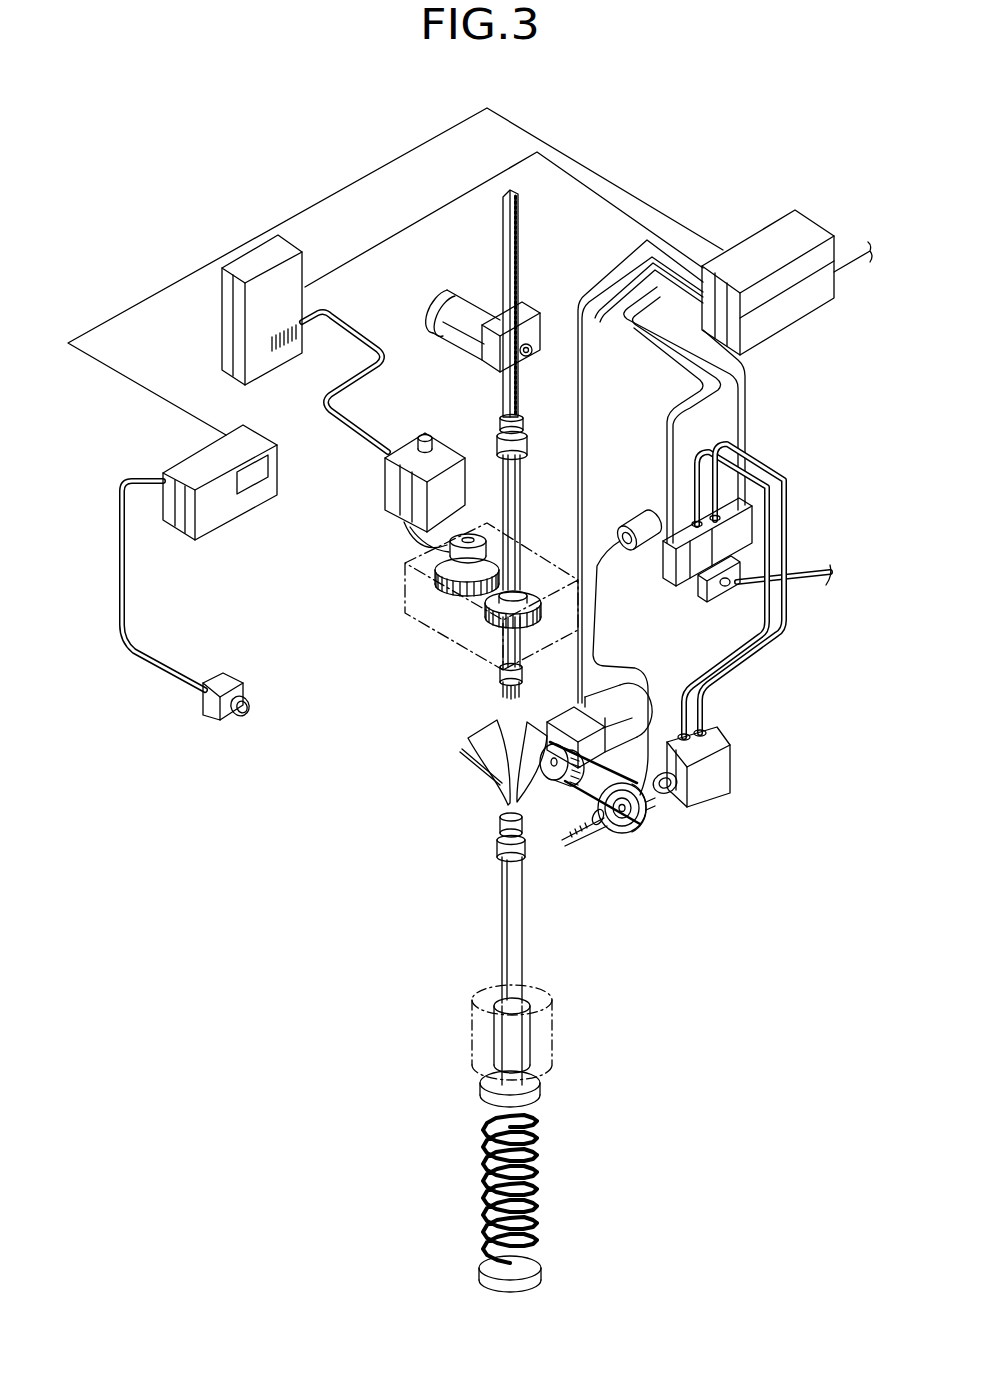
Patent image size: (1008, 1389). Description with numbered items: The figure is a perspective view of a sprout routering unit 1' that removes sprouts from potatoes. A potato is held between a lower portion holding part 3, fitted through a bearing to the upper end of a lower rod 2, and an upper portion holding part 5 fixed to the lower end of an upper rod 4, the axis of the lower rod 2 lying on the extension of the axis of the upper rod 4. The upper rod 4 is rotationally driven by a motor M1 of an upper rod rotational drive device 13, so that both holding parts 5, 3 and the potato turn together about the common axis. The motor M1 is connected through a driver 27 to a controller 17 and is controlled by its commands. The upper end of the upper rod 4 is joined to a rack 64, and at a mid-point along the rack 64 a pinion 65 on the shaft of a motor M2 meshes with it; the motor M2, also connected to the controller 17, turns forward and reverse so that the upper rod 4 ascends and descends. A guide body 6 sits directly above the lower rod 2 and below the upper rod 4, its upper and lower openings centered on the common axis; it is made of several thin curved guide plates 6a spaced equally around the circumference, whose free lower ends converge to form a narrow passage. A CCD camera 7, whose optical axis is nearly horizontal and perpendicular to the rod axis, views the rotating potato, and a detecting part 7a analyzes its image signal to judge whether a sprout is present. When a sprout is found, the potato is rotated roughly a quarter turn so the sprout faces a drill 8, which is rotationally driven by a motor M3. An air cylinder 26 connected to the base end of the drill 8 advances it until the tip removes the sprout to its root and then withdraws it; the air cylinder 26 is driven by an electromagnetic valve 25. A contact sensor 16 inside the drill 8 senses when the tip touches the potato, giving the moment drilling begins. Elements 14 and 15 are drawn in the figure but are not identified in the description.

The sprout routering unit 1' is at (675, 110).
The lower rod 2 is at (524, 977).
The lower portion holding part 3 is at (494, 828).
The upper rod 4 is at (502, 647).
The upper portion holding part 5 is at (501, 689).
The guide body 6 is at (478, 735).
The guide plates 6a is at (468, 738).
The CCD camera 7 is at (207, 722).
The detecting part 7a is at (232, 494).
The drill 8 is at (652, 824).
The upper rod rotational drive device 13 is at (400, 576).
The rack 14 is at (546, 288).
The pump unit 15 is at (711, 771).
The contact sensor 16 is at (632, 520).
The controller 17 is at (748, 245).
The electromagnetic valve 25 is at (748, 518).
The air cylinder 26 is at (706, 778).
The driver 27 is at (268, 283).
The rack 64 is at (522, 406).
The pinion 65 is at (528, 334).
The motor M1 is at (411, 456).
The motor M2 is at (464, 322).
The motor M3 is at (622, 690).